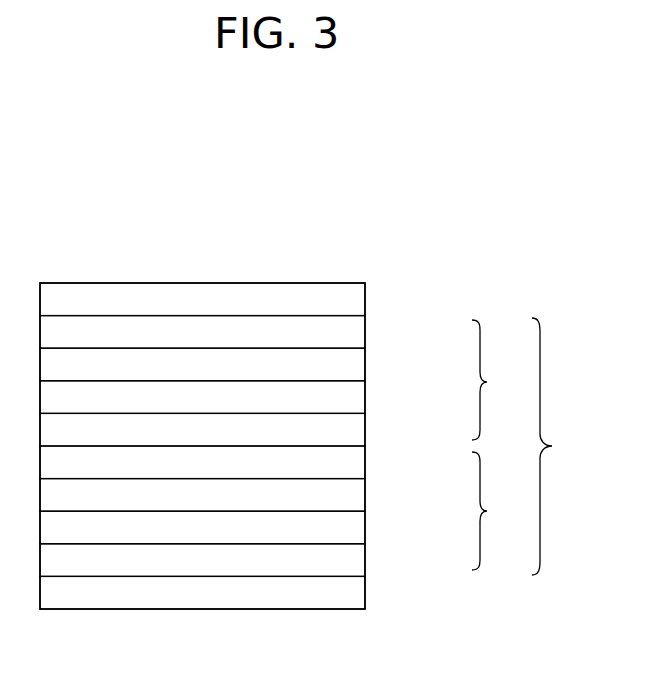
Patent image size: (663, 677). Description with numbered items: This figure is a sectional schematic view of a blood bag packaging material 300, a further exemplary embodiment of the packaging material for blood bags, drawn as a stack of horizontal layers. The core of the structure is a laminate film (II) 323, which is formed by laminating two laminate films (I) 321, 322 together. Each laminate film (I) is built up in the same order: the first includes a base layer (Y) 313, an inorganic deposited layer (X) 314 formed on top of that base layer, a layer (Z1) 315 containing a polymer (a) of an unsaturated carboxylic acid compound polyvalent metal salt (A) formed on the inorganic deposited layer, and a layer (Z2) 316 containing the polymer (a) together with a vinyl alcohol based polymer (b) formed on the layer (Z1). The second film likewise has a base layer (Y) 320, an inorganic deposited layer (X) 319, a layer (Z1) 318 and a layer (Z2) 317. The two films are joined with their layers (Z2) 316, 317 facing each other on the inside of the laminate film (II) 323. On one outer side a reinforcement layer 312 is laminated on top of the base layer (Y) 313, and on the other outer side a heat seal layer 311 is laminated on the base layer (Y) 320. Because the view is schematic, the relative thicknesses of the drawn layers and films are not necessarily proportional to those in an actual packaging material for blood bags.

The blood bag packaging material 300 is at (203, 265).
The heat seal layer 311 is at (348, 593).
The reinforcement layer 312 is at (348, 299).
The base layer (Y) 313 is at (348, 332).
The inorganic deposited layer (X) 314 is at (348, 364).
The layer (Z1) 315 is at (348, 397).
The layer (Z2) 316 is at (348, 430).
The layer (Z2) 317 is at (348, 462).
The layer (Z1) 318 is at (348, 495).
The inorganic deposited layer (X) 319 is at (348, 528).
The base layer (Y) 320 is at (348, 560).
The laminate film (I) 321 is at (503, 380).
The laminate film (I) 322 is at (503, 511).
The laminate film (II) 323 is at (564, 446).